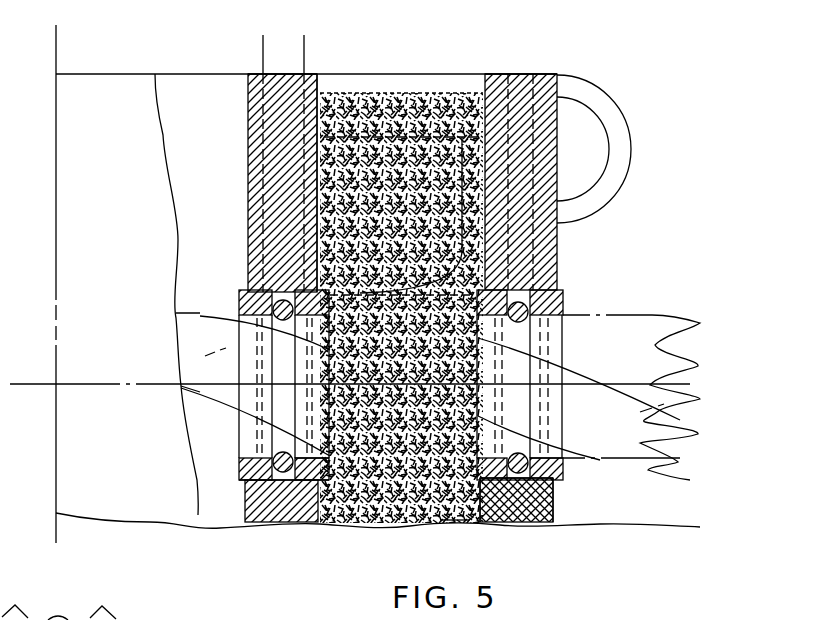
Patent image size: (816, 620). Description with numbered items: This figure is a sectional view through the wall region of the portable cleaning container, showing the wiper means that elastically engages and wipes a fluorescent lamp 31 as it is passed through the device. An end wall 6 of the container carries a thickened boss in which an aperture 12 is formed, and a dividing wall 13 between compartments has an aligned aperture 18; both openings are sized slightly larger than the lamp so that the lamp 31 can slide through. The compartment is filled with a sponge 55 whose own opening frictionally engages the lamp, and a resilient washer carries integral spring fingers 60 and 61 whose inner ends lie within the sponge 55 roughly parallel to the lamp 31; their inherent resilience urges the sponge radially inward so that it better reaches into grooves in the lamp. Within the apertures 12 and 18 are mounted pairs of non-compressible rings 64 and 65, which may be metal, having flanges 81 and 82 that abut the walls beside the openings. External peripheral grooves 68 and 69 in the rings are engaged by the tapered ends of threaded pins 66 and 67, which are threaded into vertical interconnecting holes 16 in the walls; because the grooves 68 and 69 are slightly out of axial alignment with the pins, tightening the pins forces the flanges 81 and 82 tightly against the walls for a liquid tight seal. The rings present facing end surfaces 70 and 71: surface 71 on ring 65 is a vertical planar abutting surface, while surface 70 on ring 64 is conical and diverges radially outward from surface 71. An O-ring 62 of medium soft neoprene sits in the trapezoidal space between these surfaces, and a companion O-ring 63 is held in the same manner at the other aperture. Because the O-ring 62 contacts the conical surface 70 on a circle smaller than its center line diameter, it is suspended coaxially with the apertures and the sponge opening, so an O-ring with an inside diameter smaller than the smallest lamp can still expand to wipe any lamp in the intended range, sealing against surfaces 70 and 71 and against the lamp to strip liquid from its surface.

The end wall 6 is at (557, 160).
The aperture 12 is at (520, 288).
The dividing wall 13 is at (283, 74).
The interconnecting holes 16 is at (324, 72).
The aperture 18 is at (262, 290).
The fluorescent lamp 31 is at (602, 304).
The sponge 55 is at (390, 98).
The spring finger 60 is at (455, 232).
The spring finger 61 is at (448, 524).
The O-ring 62 is at (535, 482).
The O-ring 63 is at (272, 482).
The non-compressible ring 64 is at (563, 466).
The non-compressible ring 65 is at (258, 482).
The threaded pin 66 is at (310, 92).
The threaded pin 67 is at (256, 90).
The external peripheral groove 68 is at (306, 482).
The external peripheral groove 69 is at (265, 482).
The facing end surface 70 is at (553, 520).
The facing end surface 71 is at (520, 482).
The flange 81 is at (556, 486).
The flange 82 is at (490, 482).